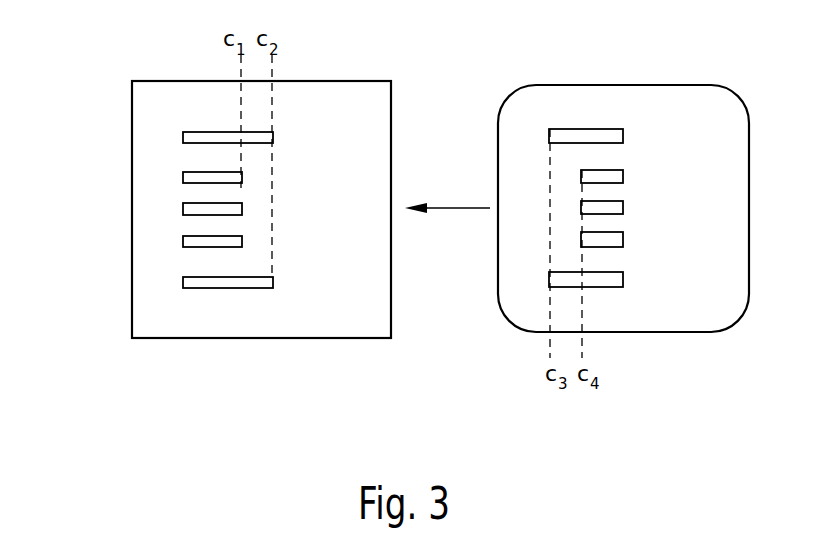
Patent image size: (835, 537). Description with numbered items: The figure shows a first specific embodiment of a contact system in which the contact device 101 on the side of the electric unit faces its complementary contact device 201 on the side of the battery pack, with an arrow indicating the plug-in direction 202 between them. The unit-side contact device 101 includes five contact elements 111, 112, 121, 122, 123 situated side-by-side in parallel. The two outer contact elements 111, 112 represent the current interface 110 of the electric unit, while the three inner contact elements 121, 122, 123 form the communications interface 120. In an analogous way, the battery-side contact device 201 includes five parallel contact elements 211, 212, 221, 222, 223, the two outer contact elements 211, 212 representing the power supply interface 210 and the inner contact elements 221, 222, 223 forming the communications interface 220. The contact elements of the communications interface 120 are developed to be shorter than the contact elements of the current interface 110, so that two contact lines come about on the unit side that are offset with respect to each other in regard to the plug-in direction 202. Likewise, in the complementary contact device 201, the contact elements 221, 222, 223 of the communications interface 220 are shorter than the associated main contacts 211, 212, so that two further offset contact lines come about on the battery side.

The contact device 101 is at (254, 328).
The current interface 110 is at (200, 329).
The contact element 111 is at (183, 138).
The contact element 112 is at (183, 282).
The communications interface 120 is at (88, 162).
The contact element 121 is at (183, 177).
The contact element 122 is at (183, 209).
The contact element 123 is at (183, 241).
The contact device 201 is at (701, 320).
The plug-in direction 202 is at (451, 208).
The power supply interface 210 is at (631, 303).
The contact element 211 is at (623, 136).
The contact element 212 is at (623, 280).
The communications interface 220 is at (730, 233).
The contact element 221 is at (623, 177).
The contact element 222 is at (623, 208).
The contact element 223 is at (623, 240).